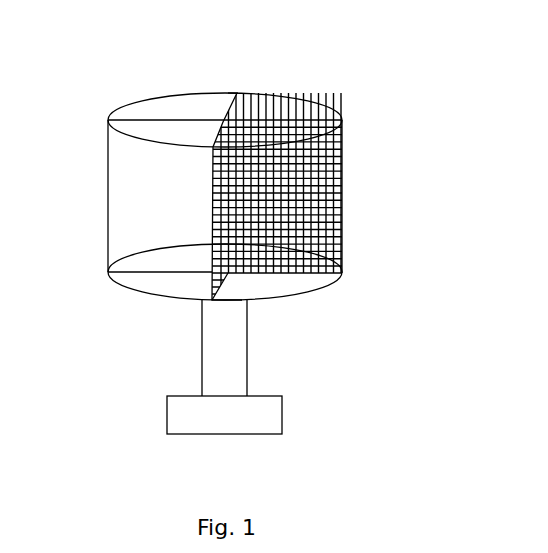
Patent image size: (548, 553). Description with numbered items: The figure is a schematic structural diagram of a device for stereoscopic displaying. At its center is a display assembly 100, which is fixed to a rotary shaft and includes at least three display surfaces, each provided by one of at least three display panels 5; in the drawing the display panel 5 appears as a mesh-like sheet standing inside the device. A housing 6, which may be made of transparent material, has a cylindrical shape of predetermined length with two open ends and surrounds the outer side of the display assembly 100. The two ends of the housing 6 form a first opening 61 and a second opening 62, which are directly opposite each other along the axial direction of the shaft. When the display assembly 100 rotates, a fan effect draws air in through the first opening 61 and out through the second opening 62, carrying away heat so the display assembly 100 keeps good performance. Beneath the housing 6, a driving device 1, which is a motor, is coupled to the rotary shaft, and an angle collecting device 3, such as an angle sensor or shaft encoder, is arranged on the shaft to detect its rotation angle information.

The display assembly 100 is at (273, 118).
The driving device 1 is at (232, 367).
The angle collecting device 3 is at (233, 327).
The display panel 5 is at (337, 115).
The housing 6 is at (107, 177).
The first opening 61 is at (277, 283).
The second opening 62 is at (213, 105).